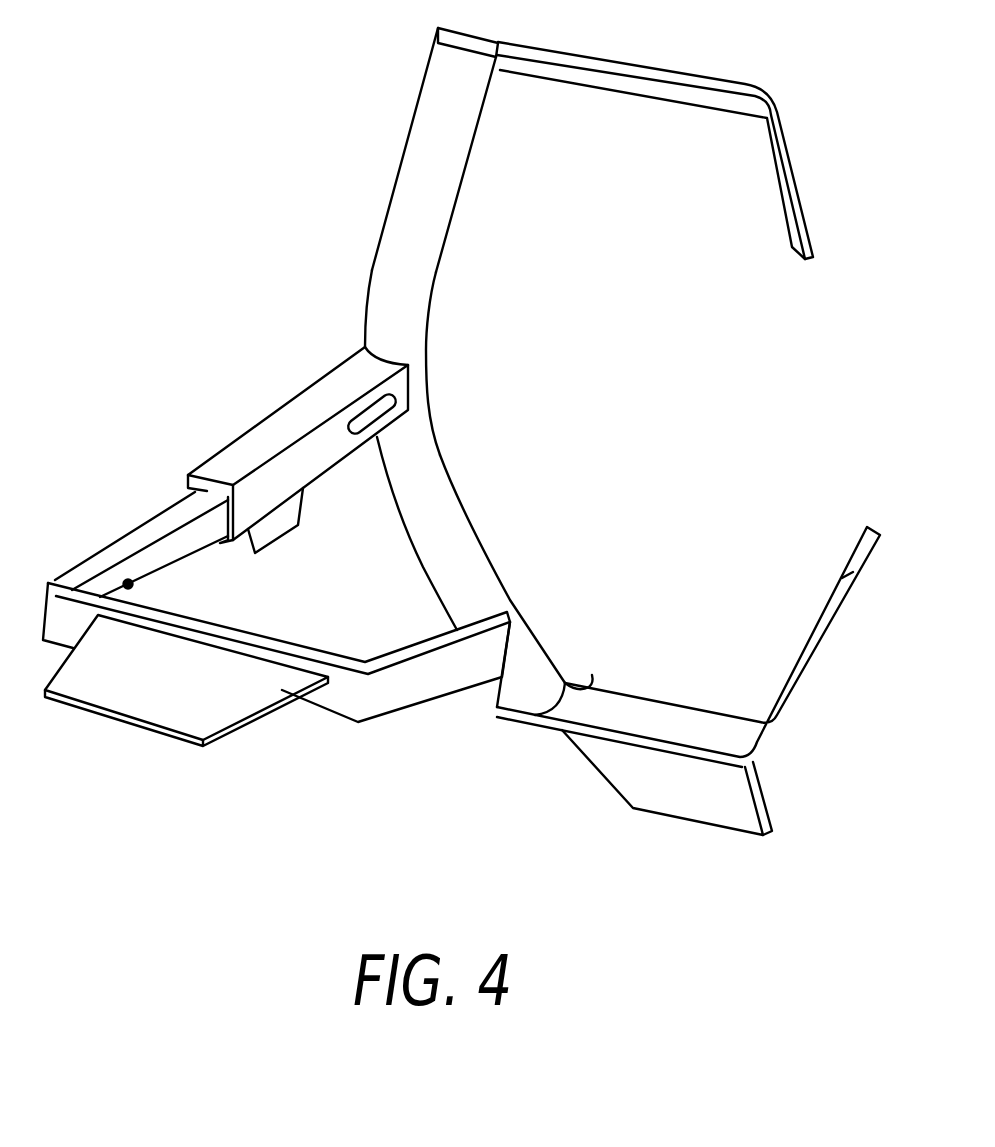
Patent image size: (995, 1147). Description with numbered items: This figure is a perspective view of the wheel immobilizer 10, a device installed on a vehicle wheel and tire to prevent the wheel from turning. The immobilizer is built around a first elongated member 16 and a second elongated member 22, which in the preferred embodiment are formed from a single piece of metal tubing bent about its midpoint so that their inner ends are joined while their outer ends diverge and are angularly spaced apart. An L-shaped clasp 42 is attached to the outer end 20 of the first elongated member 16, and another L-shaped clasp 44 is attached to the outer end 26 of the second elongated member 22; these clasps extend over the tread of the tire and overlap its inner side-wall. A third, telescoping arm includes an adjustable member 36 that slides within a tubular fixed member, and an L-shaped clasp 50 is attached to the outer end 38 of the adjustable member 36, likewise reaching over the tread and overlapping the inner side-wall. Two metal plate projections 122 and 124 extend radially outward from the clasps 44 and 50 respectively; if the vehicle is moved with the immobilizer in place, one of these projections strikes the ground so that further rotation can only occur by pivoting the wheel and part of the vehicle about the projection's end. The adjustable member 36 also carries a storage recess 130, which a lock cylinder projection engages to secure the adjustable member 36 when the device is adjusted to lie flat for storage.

The wheel immobilizer 10 is at (208, 207).
The first elongated member 16 is at (465, 367).
The outer end of first elongated member 20 is at (462, 47).
The second elongated member 22 is at (433, 522).
The L-shaped clasp 42 is at (627, 64).
The adjustable member 36 is at (133, 550).
The outer end of adjustable member 38 is at (80, 580).
The storage recess 130 is at (128, 584).
The L-shaped clasp 50 is at (380, 696).
The projection 124 is at (167, 686).
The outer end of second elongated member 26 is at (590, 688).
The L-shaped clasp 44 is at (665, 723).
The projection 122 is at (695, 797).